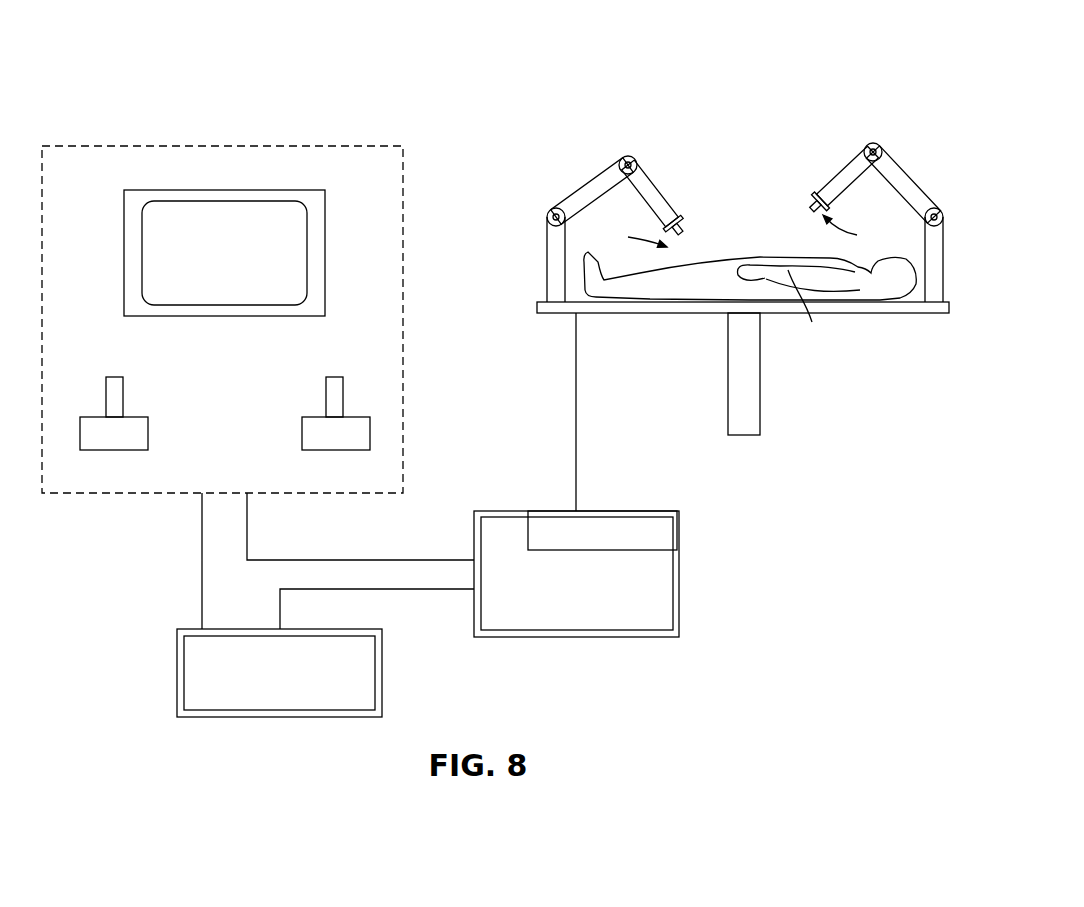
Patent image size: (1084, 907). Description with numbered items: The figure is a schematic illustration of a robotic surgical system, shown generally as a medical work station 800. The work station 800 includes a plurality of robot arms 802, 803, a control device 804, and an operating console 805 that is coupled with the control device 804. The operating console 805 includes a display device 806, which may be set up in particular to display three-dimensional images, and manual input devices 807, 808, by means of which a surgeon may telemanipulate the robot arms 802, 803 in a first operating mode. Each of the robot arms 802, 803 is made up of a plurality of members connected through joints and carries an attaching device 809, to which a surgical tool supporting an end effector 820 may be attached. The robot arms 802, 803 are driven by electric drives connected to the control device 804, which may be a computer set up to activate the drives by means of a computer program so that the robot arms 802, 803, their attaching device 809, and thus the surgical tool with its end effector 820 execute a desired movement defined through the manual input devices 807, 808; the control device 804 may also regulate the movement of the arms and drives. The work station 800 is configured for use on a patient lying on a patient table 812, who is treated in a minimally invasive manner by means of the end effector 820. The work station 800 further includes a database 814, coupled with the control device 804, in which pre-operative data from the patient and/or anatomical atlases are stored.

The medical work station 800 is at (832, 60).
The robot arm 802 is at (575, 171).
The robot arm 803 is at (820, 190).
The control device 804 is at (598, 587).
The operating console 805 is at (156, 108).
The display device 806 is at (203, 267).
The manual input device 807 is at (133, 416).
The manual input device 808 is at (317, 416).
The attaching device 809 is at (682, 212).
The patient table 812 is at (641, 313).
The database 814 is at (303, 685).
The end effector 820 is at (812, 197).